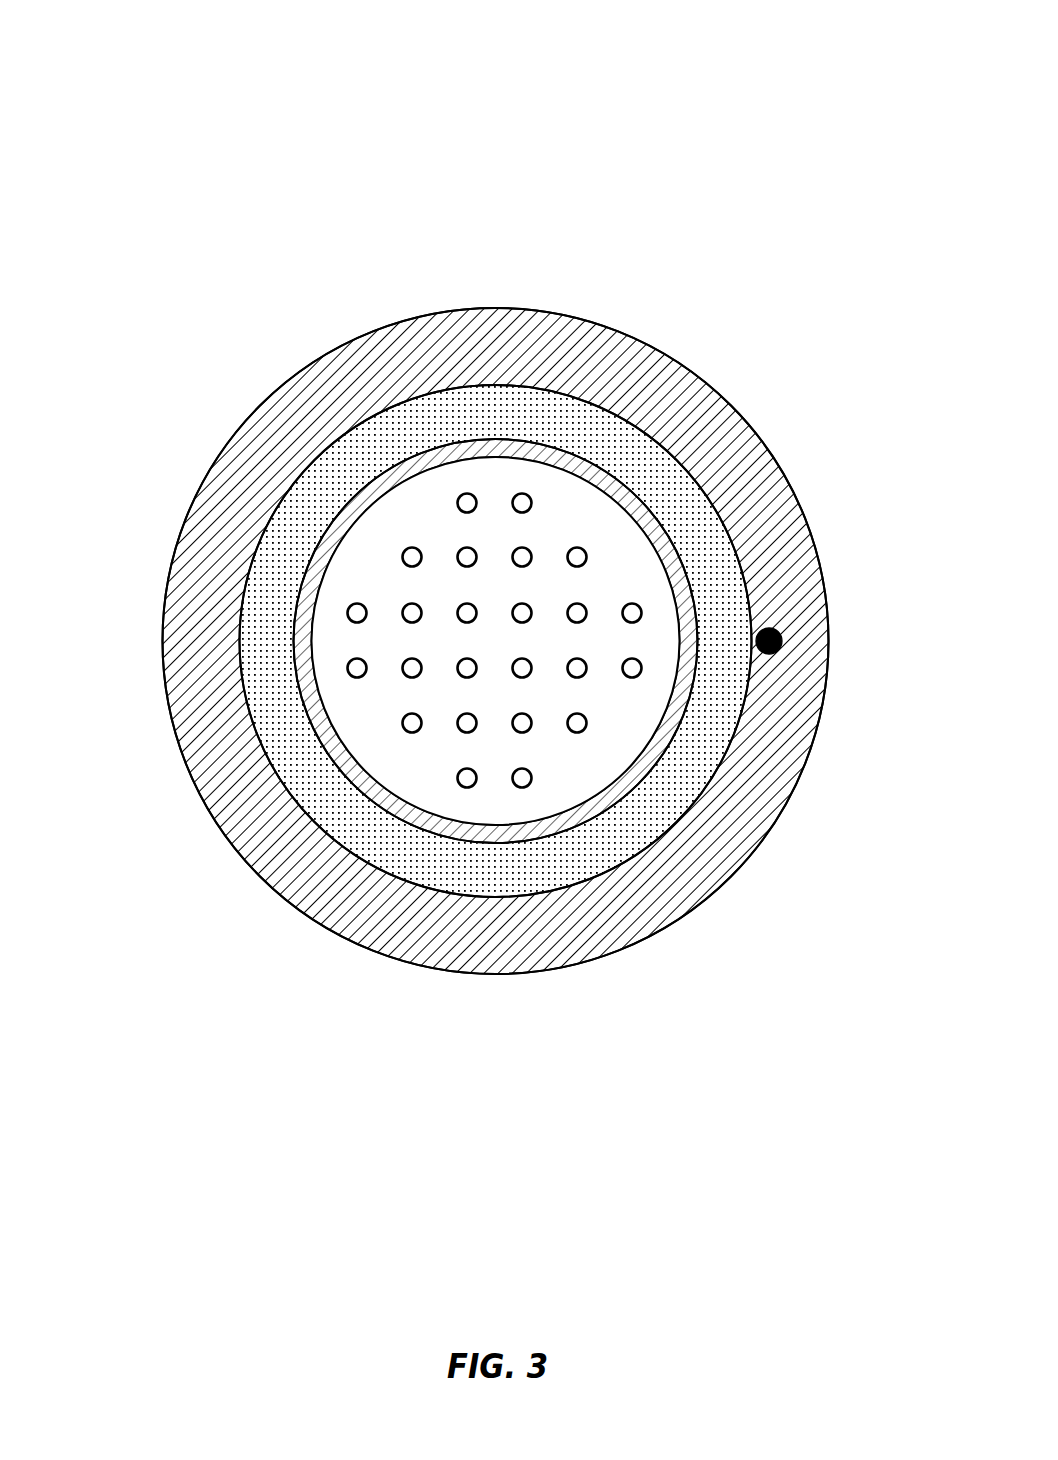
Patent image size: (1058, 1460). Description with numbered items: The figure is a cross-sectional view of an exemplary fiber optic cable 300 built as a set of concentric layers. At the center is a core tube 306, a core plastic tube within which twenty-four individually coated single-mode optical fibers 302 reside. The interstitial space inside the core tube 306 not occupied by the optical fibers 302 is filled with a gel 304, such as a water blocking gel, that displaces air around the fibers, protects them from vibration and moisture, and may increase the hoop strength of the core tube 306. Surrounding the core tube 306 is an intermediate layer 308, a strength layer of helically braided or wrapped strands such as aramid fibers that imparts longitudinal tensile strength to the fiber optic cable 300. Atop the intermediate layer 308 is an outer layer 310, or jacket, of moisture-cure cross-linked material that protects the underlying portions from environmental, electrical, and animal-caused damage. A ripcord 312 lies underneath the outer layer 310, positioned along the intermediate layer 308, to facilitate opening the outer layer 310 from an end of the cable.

The fiber optic cable 300 is at (102, 168).
The optical fibers 302 is at (400, 557).
The gel 304 is at (348, 577).
The core tube 306 is at (522, 443).
The intermediate layer 308 is at (673, 479).
The outer layer 310 is at (805, 500).
The ripcord 312 is at (783, 640).